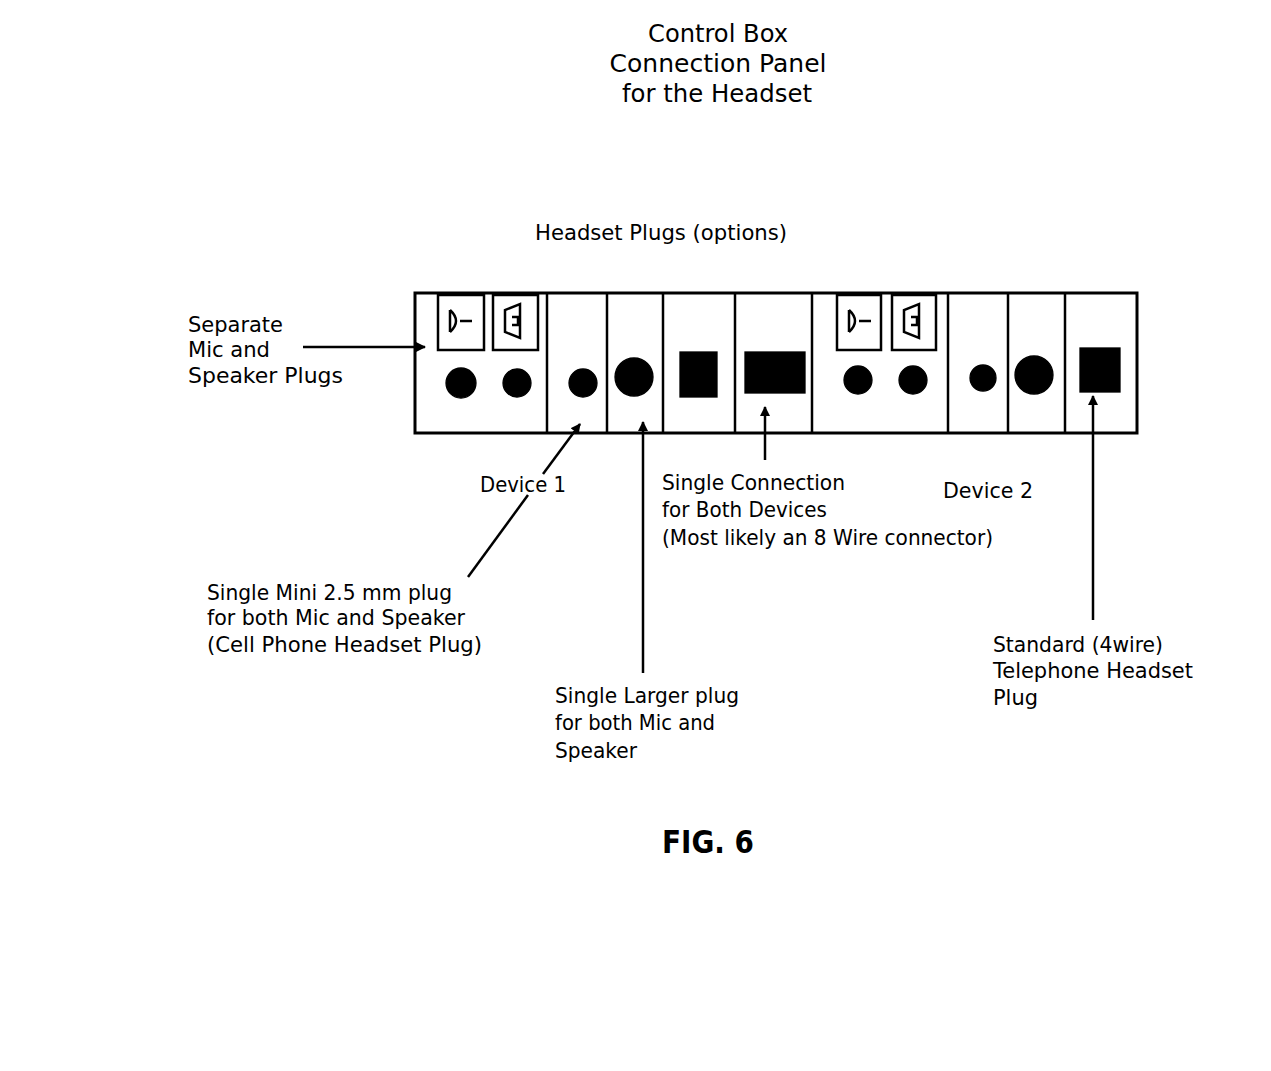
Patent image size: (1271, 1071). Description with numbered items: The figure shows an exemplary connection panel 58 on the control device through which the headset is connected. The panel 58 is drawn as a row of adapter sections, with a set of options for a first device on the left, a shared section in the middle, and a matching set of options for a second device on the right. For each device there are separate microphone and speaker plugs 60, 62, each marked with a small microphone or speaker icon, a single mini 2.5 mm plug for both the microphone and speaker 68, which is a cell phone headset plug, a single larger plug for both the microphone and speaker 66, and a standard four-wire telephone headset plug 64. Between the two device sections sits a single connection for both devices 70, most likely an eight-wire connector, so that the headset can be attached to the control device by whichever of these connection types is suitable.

The connection panel 58 is at (428, 293).
The microphone plug 60 is at (460, 398).
The speaker plug 62 is at (516, 397).
The standard (4 wire) telephone headset plug 64 is at (696, 352).
The single larger plug for both the microphone and speaker 66 is at (634, 358).
The single mini 2.5 mm plug for both the microphone and speaker (cell phone headset 68 is at (583, 369).
The single connection for both devices 70 is at (776, 352).